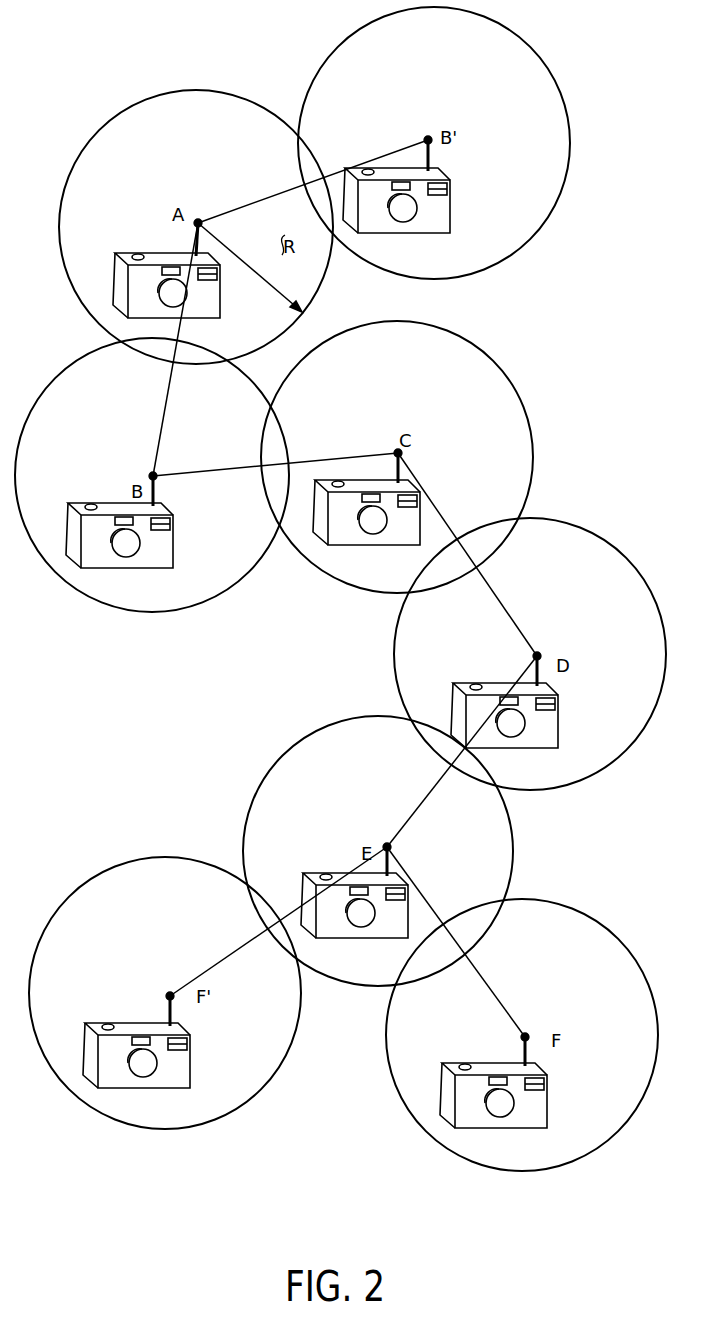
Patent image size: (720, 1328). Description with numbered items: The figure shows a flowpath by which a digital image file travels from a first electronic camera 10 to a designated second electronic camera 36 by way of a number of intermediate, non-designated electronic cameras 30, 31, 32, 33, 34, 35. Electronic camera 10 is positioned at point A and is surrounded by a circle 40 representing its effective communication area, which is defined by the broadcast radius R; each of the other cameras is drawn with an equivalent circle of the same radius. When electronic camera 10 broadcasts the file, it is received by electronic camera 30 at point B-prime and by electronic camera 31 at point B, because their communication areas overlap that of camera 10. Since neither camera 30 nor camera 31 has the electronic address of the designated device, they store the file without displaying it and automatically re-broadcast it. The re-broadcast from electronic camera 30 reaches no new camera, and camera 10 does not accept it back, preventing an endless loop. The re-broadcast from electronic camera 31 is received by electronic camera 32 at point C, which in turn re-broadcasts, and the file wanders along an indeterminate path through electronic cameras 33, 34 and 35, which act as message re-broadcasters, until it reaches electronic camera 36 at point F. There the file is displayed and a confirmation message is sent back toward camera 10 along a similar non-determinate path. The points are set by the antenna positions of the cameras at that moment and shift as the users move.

The effective communication area 40 is at (76, 165).
The electronic camera 10 is at (118, 281).
The electronic camera 30 is at (438, 213).
The electronic camera 31 is at (162, 547).
The electronic camera 32 is at (398, 533).
The electronic camera 33 is at (540, 723).
The electronic camera 34 is at (308, 897).
The electronic camera 35 is at (180, 1073).
The electronic camera 36 is at (530, 1108).